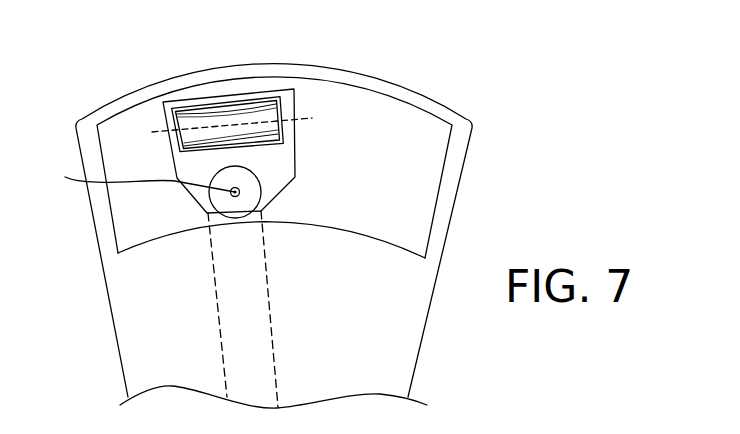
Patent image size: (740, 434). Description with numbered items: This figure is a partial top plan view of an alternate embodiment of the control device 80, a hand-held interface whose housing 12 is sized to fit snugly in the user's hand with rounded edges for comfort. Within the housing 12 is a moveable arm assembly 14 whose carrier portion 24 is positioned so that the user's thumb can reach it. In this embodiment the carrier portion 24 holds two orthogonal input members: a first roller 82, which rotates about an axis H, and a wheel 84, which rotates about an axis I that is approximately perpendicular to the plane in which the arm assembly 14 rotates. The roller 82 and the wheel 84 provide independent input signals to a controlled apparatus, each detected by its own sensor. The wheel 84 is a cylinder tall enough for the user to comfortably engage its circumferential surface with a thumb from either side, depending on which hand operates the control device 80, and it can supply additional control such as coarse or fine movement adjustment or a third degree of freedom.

The housing 12 is at (405, 357).
The arm assembly 14 is at (204, 260).
The carrier portion 24 is at (285, 182).
The control device 80 is at (314, 148).
The first roller 82 is at (248, 119).
The wheel 84 is at (248, 200).
The axis H is at (242, 120).
The axis I is at (143, 179).